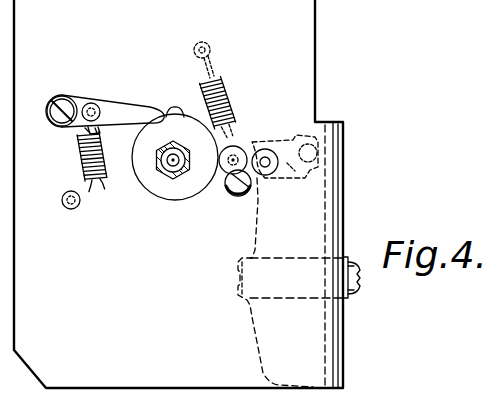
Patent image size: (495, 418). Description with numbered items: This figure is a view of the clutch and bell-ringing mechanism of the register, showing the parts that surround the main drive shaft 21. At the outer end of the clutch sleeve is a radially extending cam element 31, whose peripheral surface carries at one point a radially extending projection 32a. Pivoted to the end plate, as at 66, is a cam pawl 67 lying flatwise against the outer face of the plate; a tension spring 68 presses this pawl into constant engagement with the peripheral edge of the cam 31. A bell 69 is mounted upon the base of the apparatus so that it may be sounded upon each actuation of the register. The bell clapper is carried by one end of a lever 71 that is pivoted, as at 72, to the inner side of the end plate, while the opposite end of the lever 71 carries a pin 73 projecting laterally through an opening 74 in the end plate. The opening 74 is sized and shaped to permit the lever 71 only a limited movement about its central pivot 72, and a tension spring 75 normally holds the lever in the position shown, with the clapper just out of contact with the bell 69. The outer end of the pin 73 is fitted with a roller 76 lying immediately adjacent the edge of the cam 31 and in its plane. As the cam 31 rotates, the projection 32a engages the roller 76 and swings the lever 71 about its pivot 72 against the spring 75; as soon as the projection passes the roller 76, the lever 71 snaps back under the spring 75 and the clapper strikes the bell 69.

The main drive shaft 21 is at (165, 163).
The cam element 31 is at (163, 190).
The radially extending projection 32a is at (175, 107).
The pivot 66 is at (62, 99).
The cam pawl 67 is at (118, 108).
The tension spring 68 is at (68, 160).
The bell 69 is at (262, 345).
The lever 71 is at (248, 193).
The pivot 72 is at (266, 157).
The pin 73 is at (203, 186).
The opening 74 is at (236, 196).
The tension spring 75 is at (226, 102).
The roller 76 is at (236, 149).